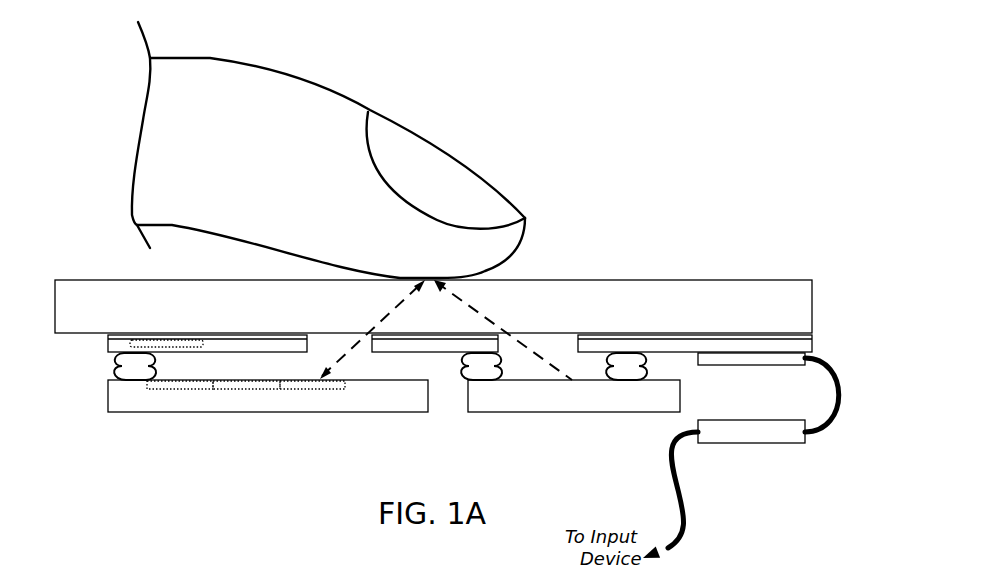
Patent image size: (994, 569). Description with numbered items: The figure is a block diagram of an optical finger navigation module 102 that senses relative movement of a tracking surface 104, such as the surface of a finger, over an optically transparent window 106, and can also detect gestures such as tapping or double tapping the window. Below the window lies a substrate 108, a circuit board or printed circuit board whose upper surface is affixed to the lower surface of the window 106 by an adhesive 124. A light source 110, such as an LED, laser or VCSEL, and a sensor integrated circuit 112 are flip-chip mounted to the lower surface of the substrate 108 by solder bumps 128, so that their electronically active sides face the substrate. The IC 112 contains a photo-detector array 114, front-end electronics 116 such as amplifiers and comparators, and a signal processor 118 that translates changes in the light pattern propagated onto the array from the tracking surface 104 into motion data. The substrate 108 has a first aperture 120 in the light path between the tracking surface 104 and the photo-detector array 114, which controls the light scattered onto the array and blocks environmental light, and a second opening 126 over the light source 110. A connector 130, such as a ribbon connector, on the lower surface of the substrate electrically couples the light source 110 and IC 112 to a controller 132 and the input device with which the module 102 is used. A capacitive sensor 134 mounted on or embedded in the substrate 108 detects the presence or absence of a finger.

The optical finger navigation (OFN) module 102 is at (729, 257).
The tracking surface 104 is at (505, 278).
The optically transparent window 106 is at (433, 306).
The substrate 108 is at (108, 344).
The light source 110 is at (574, 396).
The sensor integrated circuit 112 is at (268, 396).
The photo-detector array 114 is at (311, 392).
The front-end electronics 116 is at (244, 392).
The signal processor 118 is at (177, 392).
The first opening or aperture 120 is at (337, 338).
The adhesive 124 is at (814, 335).
The second opening 126 is at (552, 342).
The solder bumps 128 is at (118, 368).
The connector 130 is at (750, 367).
The controller 132 is at (751, 431).
The capacitive sensor 134 is at (148, 338).